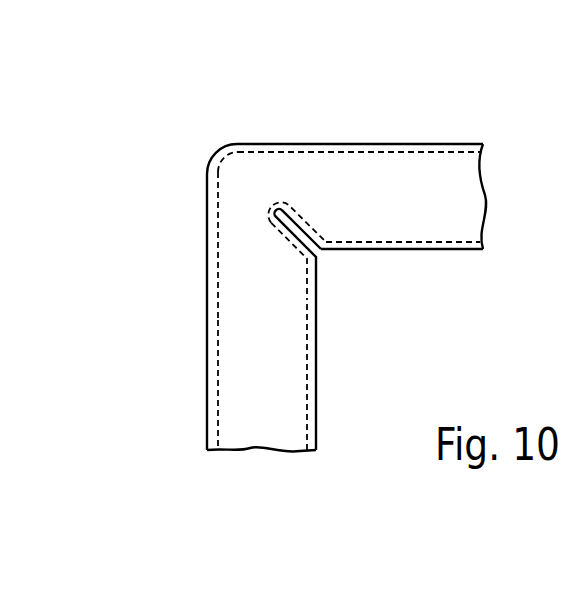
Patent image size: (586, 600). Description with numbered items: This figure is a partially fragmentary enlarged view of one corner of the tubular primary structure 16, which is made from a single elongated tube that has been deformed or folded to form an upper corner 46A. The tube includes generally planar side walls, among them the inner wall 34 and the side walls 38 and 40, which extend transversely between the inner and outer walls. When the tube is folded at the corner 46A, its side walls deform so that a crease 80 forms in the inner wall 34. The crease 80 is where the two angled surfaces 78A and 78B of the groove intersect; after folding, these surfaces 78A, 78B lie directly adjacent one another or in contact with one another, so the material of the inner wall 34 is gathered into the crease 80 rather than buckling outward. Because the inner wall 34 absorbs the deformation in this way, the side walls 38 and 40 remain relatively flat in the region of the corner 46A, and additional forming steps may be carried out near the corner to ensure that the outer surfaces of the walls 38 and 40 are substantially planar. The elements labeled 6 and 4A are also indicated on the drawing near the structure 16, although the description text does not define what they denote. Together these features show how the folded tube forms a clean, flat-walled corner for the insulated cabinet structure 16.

The conduit 6 is at (361, 143).
The side wall 38 is at (484, 148).
The side wall 40 is at (422, 170).
The crease 80 is at (279, 211).
The upper corner 46A is at (207, 156).
The tubular primary structure 16 is at (207, 275).
The conduit lower portion 4A is at (207, 390).
The angled side wall 78A is at (318, 262).
The angled side wall 78B is at (327, 252).
The side wall 34 is at (440, 250).